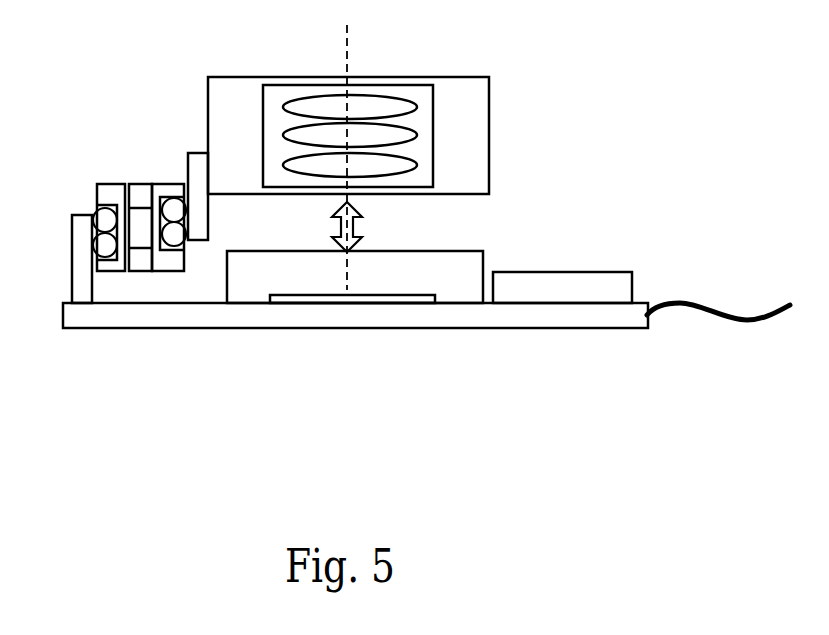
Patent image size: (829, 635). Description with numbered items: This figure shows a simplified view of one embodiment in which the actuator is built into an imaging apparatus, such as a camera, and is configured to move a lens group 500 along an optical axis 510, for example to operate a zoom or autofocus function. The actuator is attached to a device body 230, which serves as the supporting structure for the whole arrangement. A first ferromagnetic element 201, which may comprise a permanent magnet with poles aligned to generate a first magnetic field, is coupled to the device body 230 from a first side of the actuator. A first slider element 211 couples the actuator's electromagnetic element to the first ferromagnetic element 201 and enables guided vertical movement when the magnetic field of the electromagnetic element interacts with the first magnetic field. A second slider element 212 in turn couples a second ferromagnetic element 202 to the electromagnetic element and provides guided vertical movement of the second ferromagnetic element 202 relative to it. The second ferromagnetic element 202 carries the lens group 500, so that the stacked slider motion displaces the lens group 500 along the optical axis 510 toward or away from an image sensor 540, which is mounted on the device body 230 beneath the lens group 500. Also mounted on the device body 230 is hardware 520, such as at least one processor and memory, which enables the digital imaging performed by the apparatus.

The first ferromagnetic element 201 is at (75, 215).
The second ferromagnetic element 202 is at (202, 162).
The first slider element 211 is at (107, 184).
The second slider element 212 is at (172, 184).
The device body 230 is at (123, 322).
The lens group 500 is at (463, 133).
The optical axis 510 is at (347, 48).
The hardware 520 is at (577, 282).
The image sensor 540 is at (373, 298).